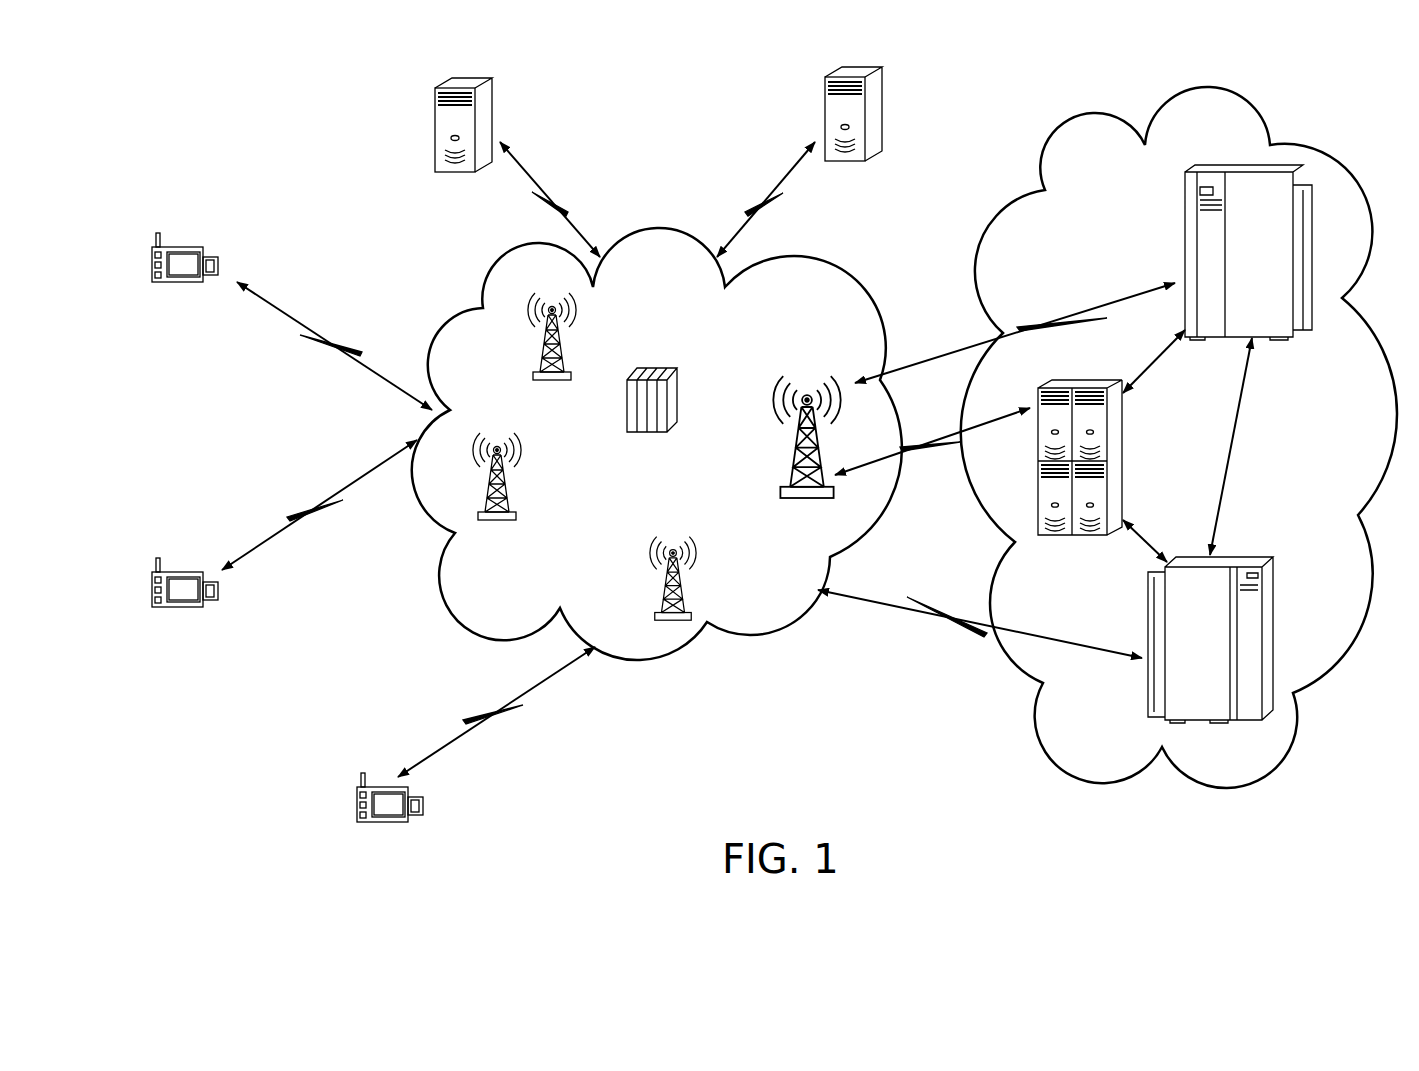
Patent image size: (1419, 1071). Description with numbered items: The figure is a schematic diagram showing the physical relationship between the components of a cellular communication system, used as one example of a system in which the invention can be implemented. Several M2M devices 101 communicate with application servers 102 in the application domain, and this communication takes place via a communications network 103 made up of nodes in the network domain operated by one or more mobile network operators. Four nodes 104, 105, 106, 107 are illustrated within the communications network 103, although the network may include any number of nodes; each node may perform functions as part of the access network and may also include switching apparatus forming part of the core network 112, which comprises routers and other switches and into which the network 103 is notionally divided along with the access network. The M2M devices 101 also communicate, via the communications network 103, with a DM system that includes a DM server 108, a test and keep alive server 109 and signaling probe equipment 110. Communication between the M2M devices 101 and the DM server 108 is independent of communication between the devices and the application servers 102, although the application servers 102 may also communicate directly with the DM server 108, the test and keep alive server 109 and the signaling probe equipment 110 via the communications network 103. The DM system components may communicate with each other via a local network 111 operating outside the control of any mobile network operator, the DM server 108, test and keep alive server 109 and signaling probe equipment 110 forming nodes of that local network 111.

The M2M device 101 is at (218, 264).
The application server 102 is at (435, 120).
The communications network 103 is at (777, 632).
The node 104 is at (500, 522).
The node 105 is at (558, 383).
The node 106 is at (672, 542).
The node 107 is at (804, 391).
The DM server 108 is at (1185, 230).
The test and keep alive server 109 is at (1148, 616).
The signaling probe equipment 110 is at (1122, 414).
The local network 111 is at (1050, 754).
The core network 112 is at (656, 366).